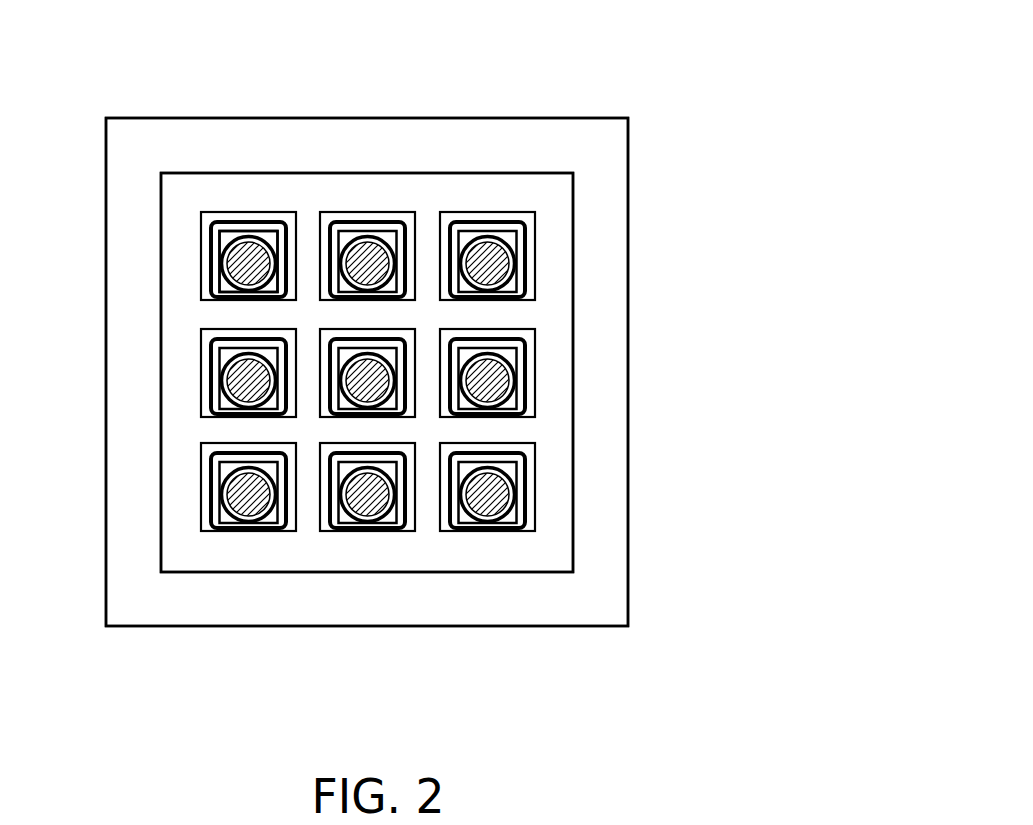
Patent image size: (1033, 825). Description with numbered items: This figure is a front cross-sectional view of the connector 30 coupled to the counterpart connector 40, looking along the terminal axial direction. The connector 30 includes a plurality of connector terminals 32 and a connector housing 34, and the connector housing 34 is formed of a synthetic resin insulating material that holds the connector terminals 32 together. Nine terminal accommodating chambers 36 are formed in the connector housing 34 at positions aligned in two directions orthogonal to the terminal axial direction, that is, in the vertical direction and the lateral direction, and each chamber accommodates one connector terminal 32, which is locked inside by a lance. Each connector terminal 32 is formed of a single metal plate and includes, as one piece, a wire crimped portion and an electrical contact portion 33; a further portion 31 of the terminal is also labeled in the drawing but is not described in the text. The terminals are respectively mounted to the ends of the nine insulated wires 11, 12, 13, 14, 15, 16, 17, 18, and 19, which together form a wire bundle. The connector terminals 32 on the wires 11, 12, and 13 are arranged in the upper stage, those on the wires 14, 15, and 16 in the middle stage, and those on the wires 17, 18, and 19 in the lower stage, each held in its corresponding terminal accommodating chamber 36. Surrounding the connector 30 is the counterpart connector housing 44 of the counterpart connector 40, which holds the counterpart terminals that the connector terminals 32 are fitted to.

The wire 11 is at (245, 258).
The wire 12 is at (362, 252).
The wire 13 is at (483, 255).
The wire 14 is at (222, 373).
The wire 15 is at (373, 383).
The wire 16 is at (503, 393).
The wire 17 is at (243, 510).
The wire 18 is at (363, 510).
The wire 19 is at (487, 510).
The connector 30 is at (542, 170).
The electrode 31 is at (217, 255).
The connector terminal 32 is at (528, 357).
The electrical contact portion 33 is at (210, 218).
The connector housing 34 is at (178, 528).
The terminal accommodating chamber 36 is at (205, 352).
The counterpart connector 40 is at (122, 108).
The counterpart connector housing 44 is at (602, 545).